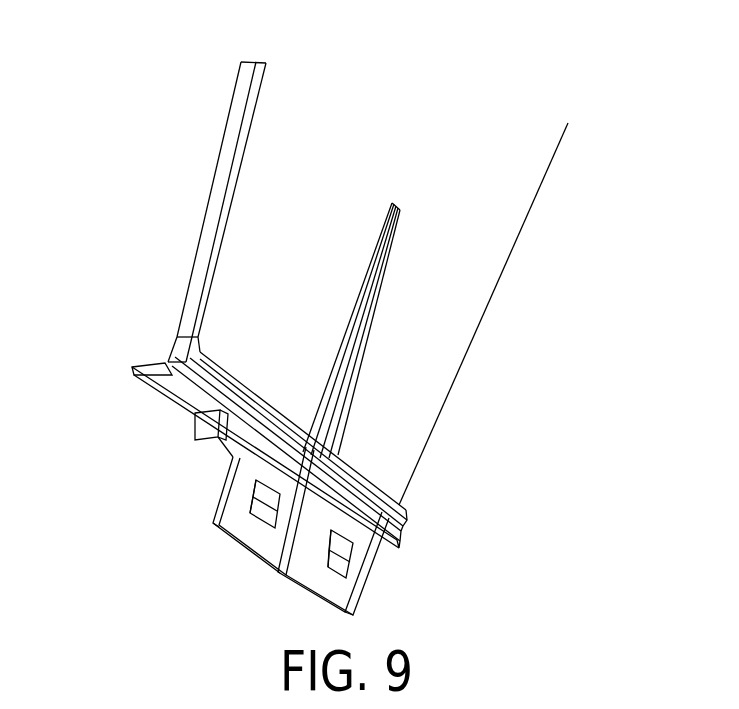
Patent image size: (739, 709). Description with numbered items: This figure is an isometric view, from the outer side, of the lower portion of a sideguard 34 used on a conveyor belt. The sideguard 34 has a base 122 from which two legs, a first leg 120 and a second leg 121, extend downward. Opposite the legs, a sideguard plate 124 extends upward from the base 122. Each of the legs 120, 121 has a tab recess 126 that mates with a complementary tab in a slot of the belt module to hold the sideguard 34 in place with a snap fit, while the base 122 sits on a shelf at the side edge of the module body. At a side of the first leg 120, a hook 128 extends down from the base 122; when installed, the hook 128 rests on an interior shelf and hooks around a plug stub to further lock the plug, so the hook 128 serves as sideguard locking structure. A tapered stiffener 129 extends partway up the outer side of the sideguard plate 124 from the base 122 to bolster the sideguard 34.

The sideguard 34 is at (146, 58).
The first leg 120 is at (250, 547).
The second leg 121 is at (325, 603).
The base 122 is at (177, 390).
The sideguard plate 124 is at (457, 293).
The tab recesses 126 is at (257, 493).
The hook 128 is at (210, 445).
The tapered stiffener 129 is at (343, 390).